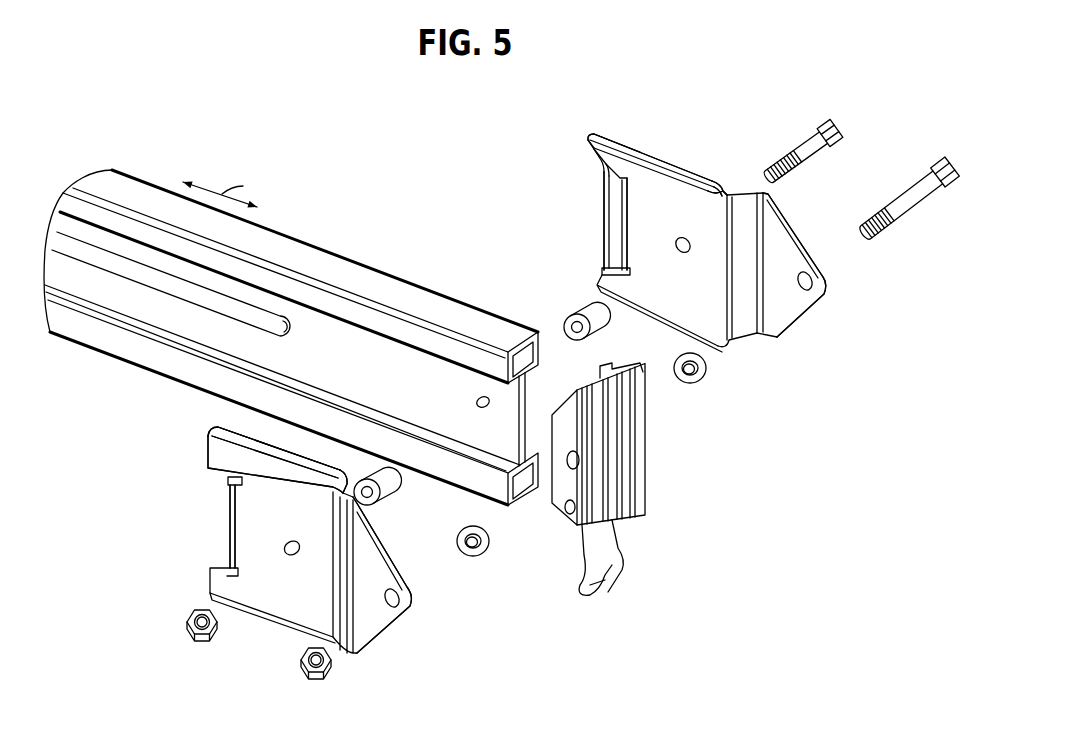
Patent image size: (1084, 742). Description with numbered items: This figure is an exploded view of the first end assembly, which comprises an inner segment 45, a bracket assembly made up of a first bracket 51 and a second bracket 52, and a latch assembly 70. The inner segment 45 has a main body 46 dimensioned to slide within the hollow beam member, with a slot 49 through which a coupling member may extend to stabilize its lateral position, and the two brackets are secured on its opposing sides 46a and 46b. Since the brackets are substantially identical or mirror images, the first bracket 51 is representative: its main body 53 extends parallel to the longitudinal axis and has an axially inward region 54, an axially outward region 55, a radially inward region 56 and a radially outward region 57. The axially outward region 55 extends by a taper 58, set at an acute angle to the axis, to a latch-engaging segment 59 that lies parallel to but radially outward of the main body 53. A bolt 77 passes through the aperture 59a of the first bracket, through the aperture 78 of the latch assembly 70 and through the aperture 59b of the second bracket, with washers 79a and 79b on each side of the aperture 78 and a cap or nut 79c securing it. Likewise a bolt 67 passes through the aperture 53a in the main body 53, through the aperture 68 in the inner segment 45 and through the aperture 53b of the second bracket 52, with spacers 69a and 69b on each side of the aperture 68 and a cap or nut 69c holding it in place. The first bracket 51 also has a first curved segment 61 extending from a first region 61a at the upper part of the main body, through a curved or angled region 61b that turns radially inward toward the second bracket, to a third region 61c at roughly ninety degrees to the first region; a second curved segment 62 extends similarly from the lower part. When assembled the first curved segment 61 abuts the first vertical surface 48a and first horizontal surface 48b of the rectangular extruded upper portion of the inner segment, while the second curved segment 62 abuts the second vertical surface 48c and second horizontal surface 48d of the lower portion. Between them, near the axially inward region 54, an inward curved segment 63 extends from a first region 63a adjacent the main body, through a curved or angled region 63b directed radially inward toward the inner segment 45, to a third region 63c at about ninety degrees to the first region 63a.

The inner segment 45 is at (316, 350).
The main body 46 is at (305, 306).
The first side of main body 46a is at (453, 295).
The second side of main body 46b is at (370, 315).
The first vertical surface 48a is at (538, 345).
The first horizontal surface 48b is at (324, 276).
The second vertical surface 48c is at (538, 490).
The second horizontal surface 48d is at (307, 419).
The slot 49 is at (143, 270).
The first bracket 51 is at (705, 225).
The second bracket 52 is at (282, 557).
The main body 53 is at (712, 312).
The aperture 53a is at (675, 250).
The aperture 53b is at (283, 548).
The axially inward region 54 is at (607, 158).
The axially outward region 55 is at (715, 205).
The radially inward region 56 is at (718, 302).
The radially outward region 57 is at (280, 613).
The taper 58 is at (748, 315).
The latch-engaging segment 59 is at (803, 312).
The aperture 59a is at (812, 282).
The aperture 59b is at (392, 607).
The first curved segment 61 is at (667, 157).
The first region 61a is at (733, 193).
The curved or angled region 61b is at (722, 187).
The third region 61c is at (685, 176).
The second curved segment 62 is at (235, 613).
The inward curved segment 63 is at (585, 210).
The first region 63a is at (630, 210).
The curved or angled region 63b is at (603, 177).
The third region 63c is at (602, 258).
The bolt 67 is at (837, 125).
The aperture 68 is at (490, 399).
The spacer 69a is at (575, 313).
The spacer 69b is at (383, 495).
The cap or nut 69c is at (195, 636).
The latch assembly 70 is at (648, 535).
The bolt 77 is at (918, 172).
The aperture 78 is at (577, 460).
The washer 79a is at (690, 385).
The washer 79b is at (473, 553).
The cap or nut 79c is at (310, 679).